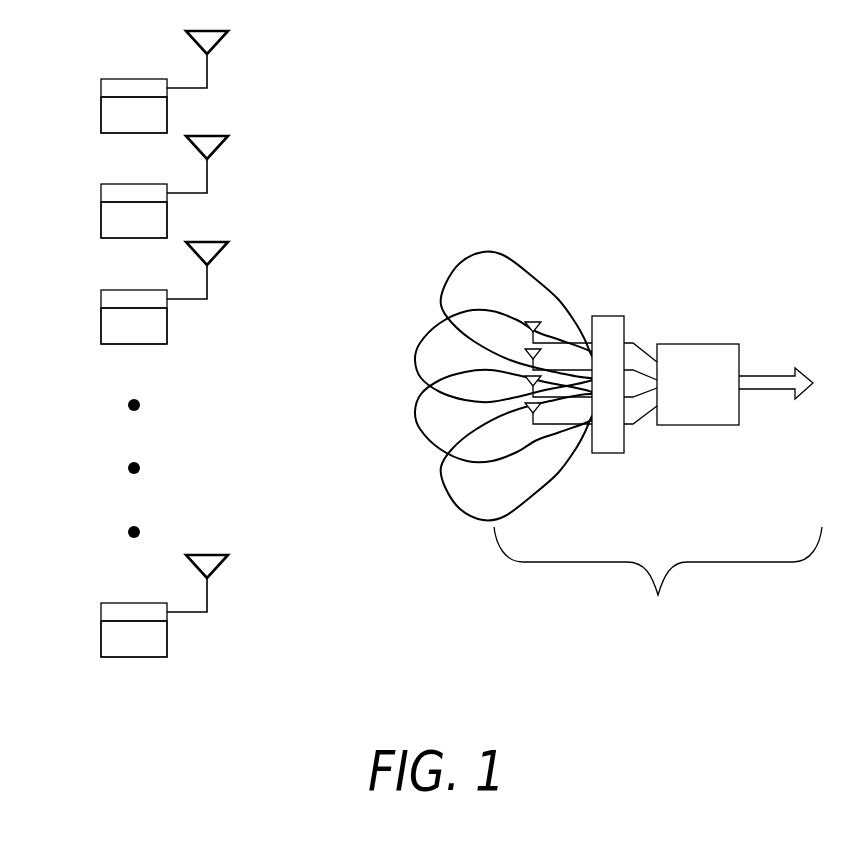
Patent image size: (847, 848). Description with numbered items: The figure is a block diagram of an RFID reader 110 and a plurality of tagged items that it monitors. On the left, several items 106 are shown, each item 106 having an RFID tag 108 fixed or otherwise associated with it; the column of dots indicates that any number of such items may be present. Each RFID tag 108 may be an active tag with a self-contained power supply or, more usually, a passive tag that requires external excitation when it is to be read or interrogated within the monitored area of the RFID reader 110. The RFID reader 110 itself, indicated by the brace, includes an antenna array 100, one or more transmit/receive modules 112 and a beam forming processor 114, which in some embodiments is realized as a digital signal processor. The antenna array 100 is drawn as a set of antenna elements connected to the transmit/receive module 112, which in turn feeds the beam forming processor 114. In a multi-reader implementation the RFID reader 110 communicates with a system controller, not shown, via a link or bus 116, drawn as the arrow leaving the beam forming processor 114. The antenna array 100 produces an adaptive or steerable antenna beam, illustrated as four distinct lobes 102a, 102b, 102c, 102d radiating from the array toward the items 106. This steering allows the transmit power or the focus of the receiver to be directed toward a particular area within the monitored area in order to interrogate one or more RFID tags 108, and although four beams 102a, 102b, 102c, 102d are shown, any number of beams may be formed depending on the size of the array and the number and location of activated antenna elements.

The antenna array 100 is at (533, 289).
The antenna beam 102a is at (462, 259).
The antenna beam 102b is at (423, 333).
The antenna beam 102c is at (423, 426).
The antenna beam 102d is at (450, 500).
The item 106 is at (167, 111).
The RFID tag 108 is at (117, 79).
The RFID reader 110 is at (658, 578).
The transmit/receive module 112 is at (610, 316).
The beam forming processor 114 is at (720, 344).
The link or bus 116 is at (768, 395).